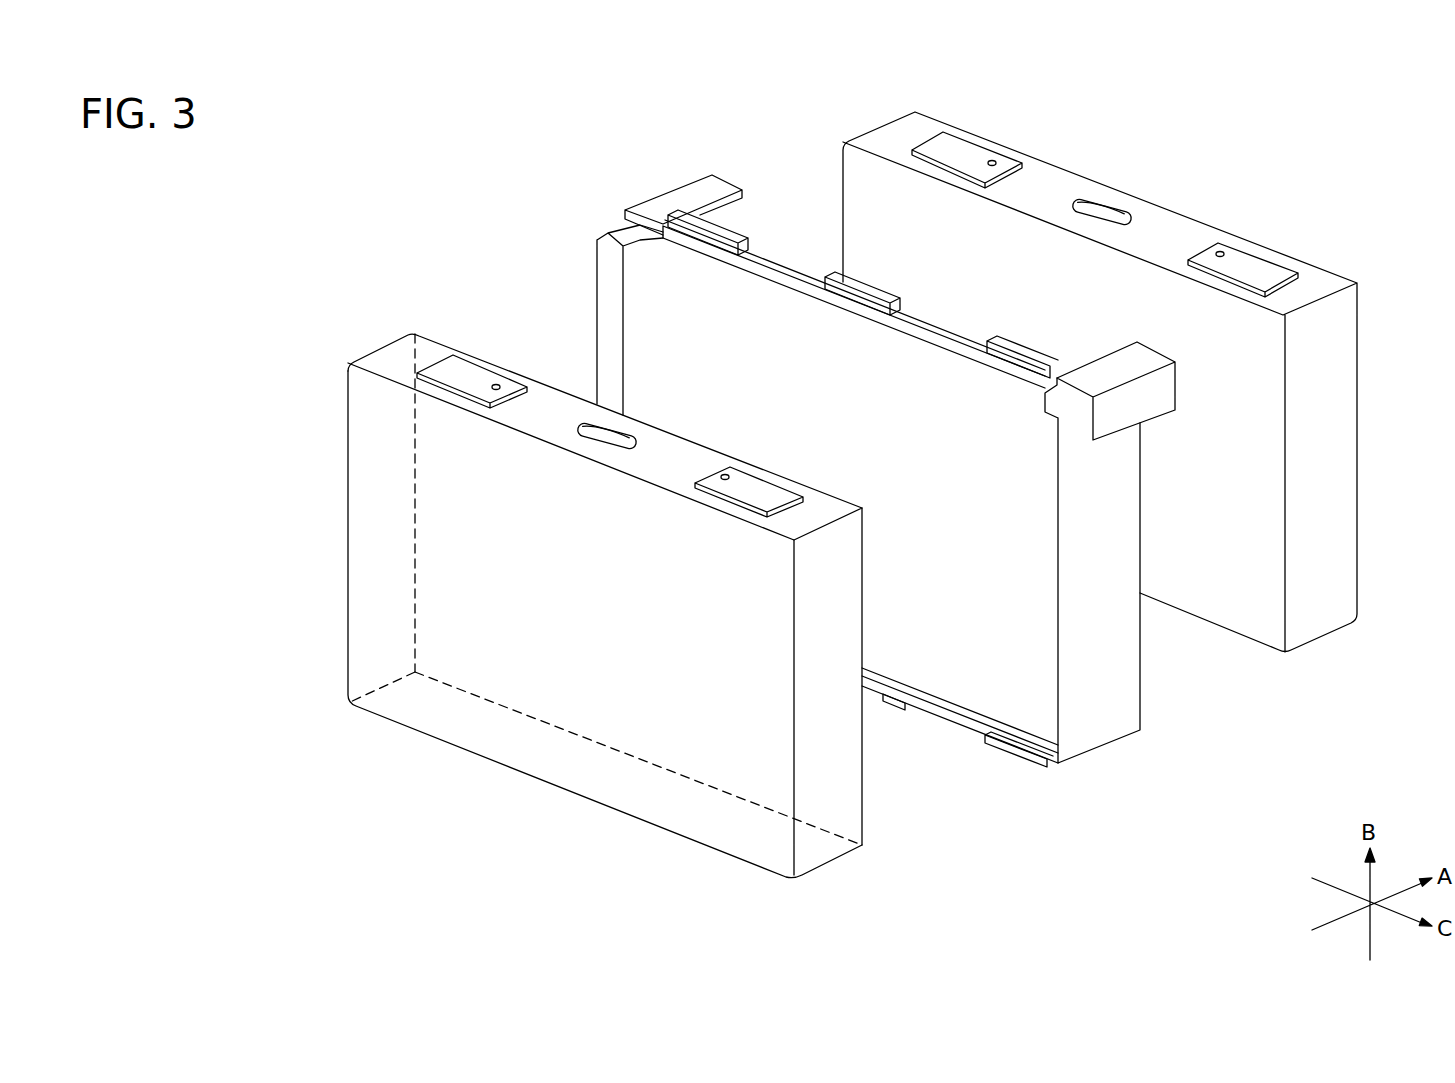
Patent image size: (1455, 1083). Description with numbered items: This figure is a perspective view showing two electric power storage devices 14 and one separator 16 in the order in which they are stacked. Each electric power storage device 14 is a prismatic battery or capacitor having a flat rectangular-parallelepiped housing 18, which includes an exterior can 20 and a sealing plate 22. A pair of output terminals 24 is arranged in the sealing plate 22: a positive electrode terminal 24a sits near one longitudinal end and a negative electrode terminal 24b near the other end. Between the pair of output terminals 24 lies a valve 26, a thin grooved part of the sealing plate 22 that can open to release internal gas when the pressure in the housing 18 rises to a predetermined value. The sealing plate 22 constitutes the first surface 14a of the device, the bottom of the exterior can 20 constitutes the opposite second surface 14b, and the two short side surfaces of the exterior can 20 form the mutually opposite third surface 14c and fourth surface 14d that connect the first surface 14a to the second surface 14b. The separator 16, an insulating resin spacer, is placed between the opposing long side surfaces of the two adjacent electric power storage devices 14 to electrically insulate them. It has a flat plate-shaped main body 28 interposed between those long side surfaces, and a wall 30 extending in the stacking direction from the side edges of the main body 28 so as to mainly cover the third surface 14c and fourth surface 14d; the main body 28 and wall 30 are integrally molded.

The electric power storage device 14 is at (1330, 642).
The first surface 14a is at (655, 470).
The second surface 14b is at (745, 830).
The third surface 14c is at (838, 803).
The fourth surface 14d is at (385, 558).
The separator 16 is at (909, 505).
The housing 18 is at (601, 590).
The exterior can 20 is at (601, 613).
The sealing plate 22 is at (604, 406).
The output terminals 24 is at (687, 527).
The positive electrode terminal 24a is at (478, 363).
The negative electrode terminal 24b is at (780, 470).
The valve 26 is at (593, 443).
The main body 28 is at (1027, 675).
The wall 30 is at (1120, 673).